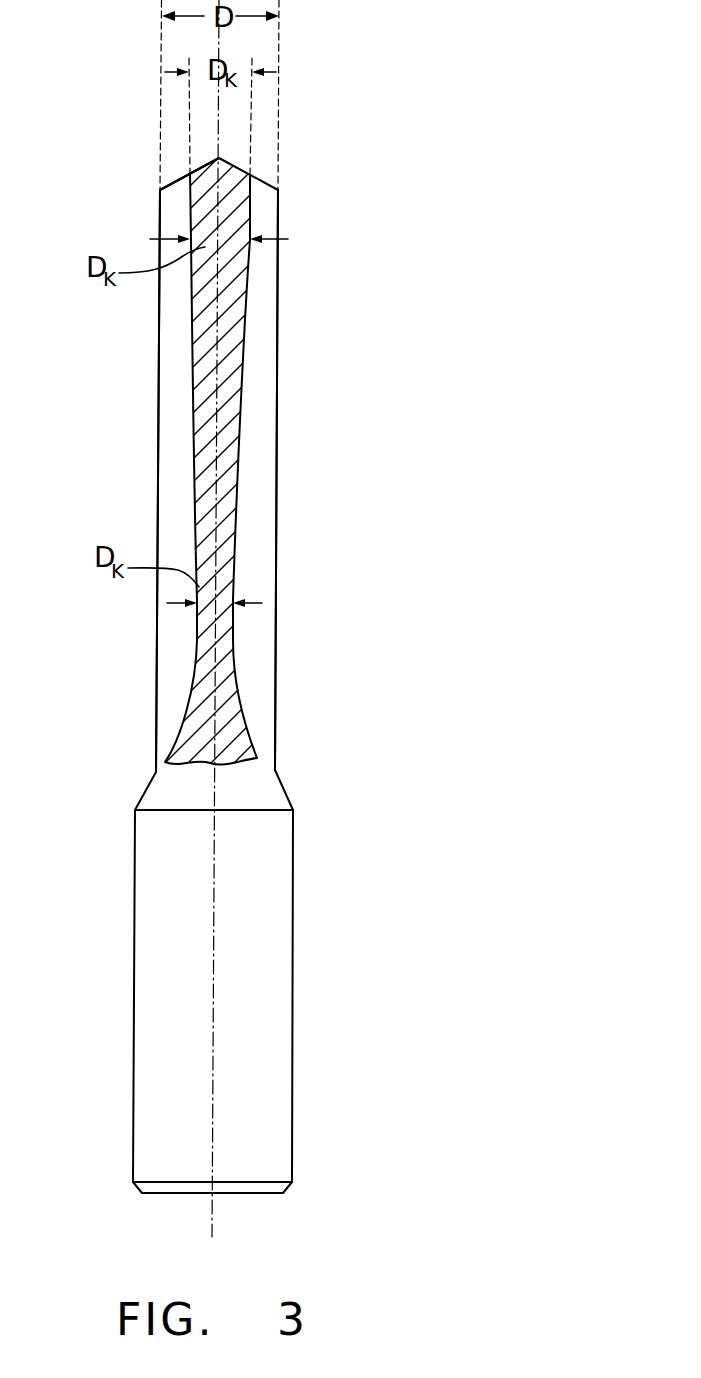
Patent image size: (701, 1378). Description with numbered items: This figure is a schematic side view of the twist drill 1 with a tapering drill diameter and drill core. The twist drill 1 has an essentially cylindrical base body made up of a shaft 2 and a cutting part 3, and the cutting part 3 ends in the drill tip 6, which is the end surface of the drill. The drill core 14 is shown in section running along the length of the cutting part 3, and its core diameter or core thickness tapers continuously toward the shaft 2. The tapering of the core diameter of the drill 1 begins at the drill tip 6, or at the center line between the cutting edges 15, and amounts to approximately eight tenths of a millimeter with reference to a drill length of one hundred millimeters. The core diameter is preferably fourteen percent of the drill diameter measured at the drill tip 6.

The twist drill 1 is at (308, 403).
The shaft 2 is at (167, 995).
The cutting part 3 is at (277, 515).
The drill tip 6 is at (181, 173).
The drill core 14 is at (208, 465).
The center line between the cutting edges 15 is at (220, 158).